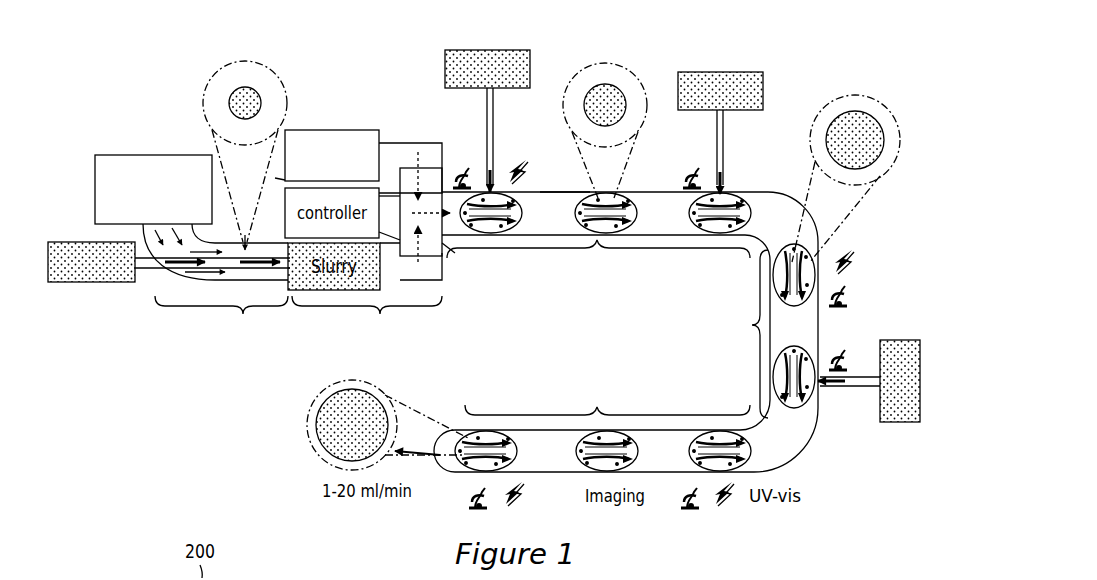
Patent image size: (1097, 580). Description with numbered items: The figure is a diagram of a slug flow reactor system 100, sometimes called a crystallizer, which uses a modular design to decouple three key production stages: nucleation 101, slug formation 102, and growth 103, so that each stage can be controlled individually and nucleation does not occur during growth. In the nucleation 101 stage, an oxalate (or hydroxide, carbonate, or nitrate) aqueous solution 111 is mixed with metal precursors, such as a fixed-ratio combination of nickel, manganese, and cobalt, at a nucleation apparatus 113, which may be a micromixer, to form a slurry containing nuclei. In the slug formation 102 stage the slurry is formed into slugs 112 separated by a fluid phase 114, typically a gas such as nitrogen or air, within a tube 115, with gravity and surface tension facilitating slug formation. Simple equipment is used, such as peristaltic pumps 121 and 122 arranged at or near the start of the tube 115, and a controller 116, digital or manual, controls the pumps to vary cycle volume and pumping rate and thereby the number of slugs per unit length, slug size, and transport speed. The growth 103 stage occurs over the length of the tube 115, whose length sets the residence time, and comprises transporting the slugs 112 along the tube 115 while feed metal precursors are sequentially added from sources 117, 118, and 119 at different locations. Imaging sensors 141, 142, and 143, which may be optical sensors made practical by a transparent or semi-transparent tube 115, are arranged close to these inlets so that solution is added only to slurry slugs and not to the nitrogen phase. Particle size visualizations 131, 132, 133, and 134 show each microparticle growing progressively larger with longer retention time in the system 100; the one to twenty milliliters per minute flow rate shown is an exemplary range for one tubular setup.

The slug flow reactor system 100 is at (118, 76).
The nucleation 101 is at (221, 345).
The slug formation 102 is at (367, 334).
The growth 103 is at (626, 332).
The oxalate aqueous solution 111 is at (126, 154).
The slugs 112 is at (496, 230).
The nucleation apparatus 113 is at (278, 282).
The fluid phase 114 is at (308, 129).
The tube 115 is at (565, 190).
The controller 116 is at (275, 190).
The feed metal precursor source 117 is at (460, 50).
The feed metal precursor source 118 is at (726, 72).
The feed metal precursor source 119 is at (912, 340).
The peristaltic pump 121 is at (408, 168).
The peristaltic pump 122 is at (445, 248).
The particle size visualization 131 is at (243, 62).
The particle size visualization 132 is at (608, 62).
The particle size visualization 133 is at (835, 95).
The particle size visualization 134 is at (305, 440).
The imaging sensor 141 is at (462, 168).
The imaging sensor 142 is at (692, 168).
The imaging sensor 143 is at (845, 355).